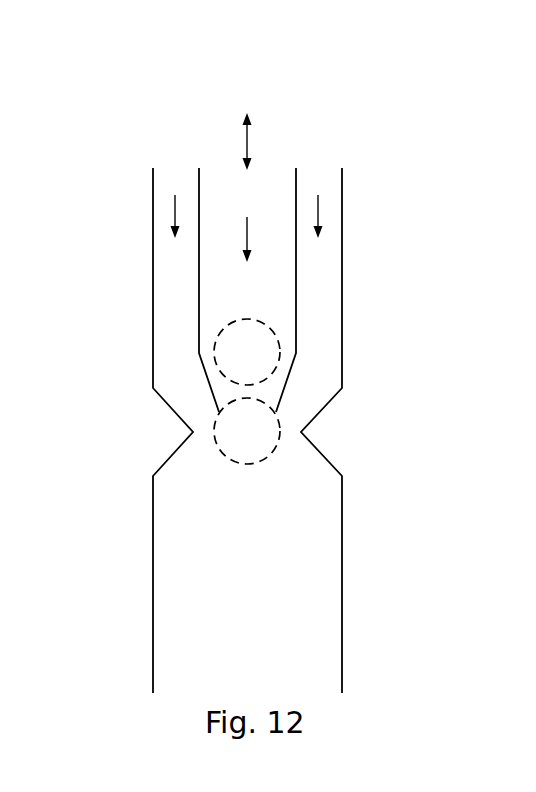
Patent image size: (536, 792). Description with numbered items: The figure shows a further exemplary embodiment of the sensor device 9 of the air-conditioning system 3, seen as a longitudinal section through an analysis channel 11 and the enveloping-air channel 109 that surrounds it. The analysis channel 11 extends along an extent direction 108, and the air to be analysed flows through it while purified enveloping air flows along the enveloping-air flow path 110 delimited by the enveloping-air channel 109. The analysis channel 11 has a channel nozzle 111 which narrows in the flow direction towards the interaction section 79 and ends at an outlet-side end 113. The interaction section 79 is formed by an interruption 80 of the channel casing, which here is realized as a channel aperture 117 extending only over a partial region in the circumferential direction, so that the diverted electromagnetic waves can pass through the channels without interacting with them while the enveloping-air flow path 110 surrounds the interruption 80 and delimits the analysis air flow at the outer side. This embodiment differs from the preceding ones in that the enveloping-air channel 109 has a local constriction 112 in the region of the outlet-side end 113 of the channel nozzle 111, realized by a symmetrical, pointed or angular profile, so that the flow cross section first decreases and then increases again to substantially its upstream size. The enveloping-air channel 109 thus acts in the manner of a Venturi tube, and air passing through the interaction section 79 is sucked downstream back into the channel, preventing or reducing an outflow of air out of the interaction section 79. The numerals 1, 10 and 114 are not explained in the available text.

The device 1 is at (404, 147).
The air-conditioning system 3 is at (430, 211).
The sensor device 9 is at (132, 372).
The channel 10 is at (128, 135).
The analysis channel 11 is at (187, 268).
The interaction section 79 is at (289, 375).
The interruption 80 is at (325, 393).
The extent direction 108 is at (249, 140).
The enveloping-air channel 109 is at (308, 268).
The enveloping-air flow path 110 is at (175, 208).
The channel nozzle 111 is at (207, 382).
The local constriction 112 is at (155, 435).
The outlet-side end 113 is at (250, 440).
The outlet section 114 is at (138, 548).
The channel aperture 117 is at (280, 345).